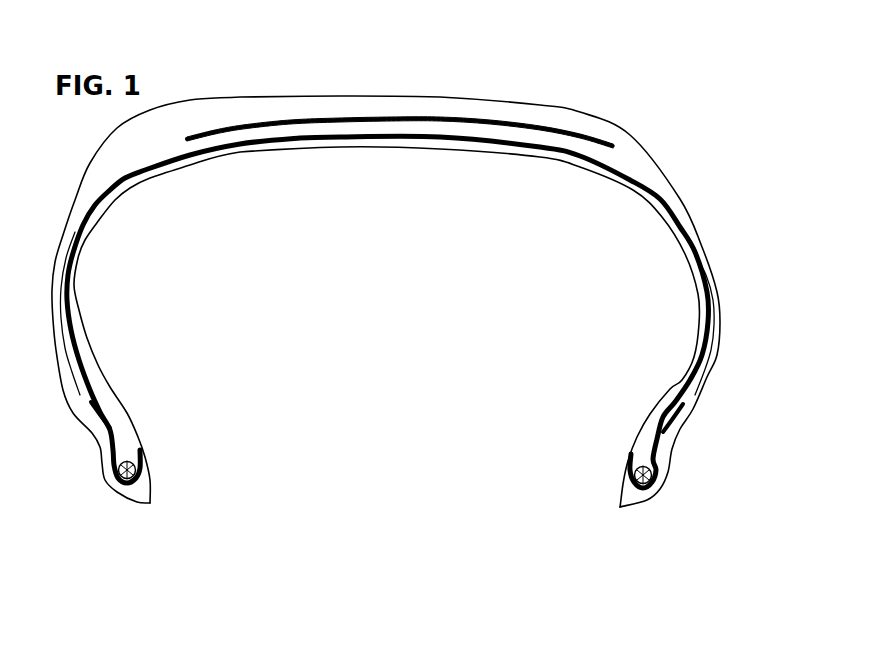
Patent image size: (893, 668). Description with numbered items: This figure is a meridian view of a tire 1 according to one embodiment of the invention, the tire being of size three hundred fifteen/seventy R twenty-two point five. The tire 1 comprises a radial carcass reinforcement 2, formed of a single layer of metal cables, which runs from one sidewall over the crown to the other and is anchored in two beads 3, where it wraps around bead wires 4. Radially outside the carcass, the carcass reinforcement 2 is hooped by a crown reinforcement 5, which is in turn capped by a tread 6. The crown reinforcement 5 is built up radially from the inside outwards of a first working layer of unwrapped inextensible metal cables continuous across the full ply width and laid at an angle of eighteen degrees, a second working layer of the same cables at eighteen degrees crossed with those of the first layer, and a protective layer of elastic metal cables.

The tire 1 is at (599, 71).
The radial carcass reinforcement 2 is at (68, 317).
The beads 3 is at (140, 495).
The bead wires 4 is at (140, 465).
The crown reinforcement 5 is at (243, 131).
The tread 6 is at (337, 95).